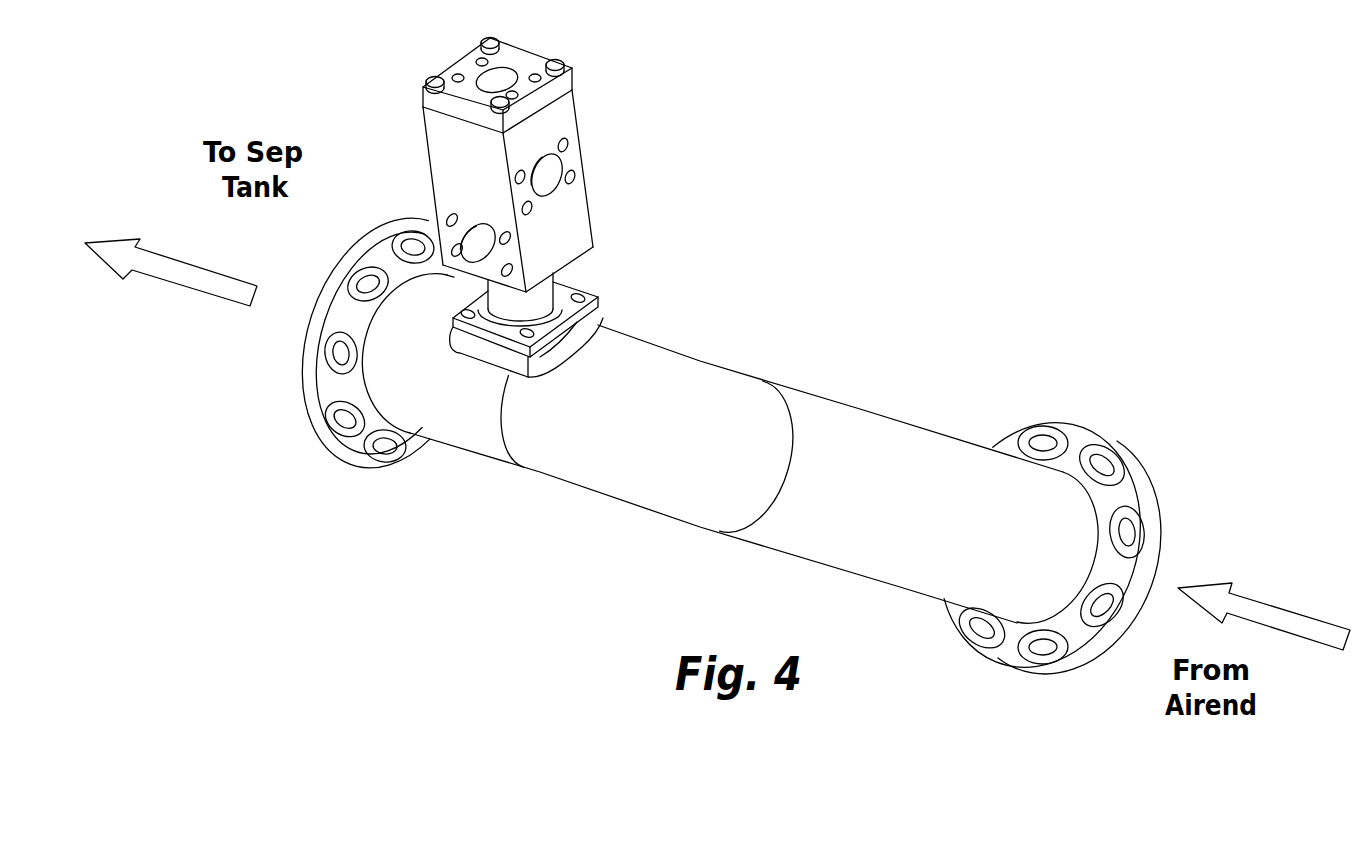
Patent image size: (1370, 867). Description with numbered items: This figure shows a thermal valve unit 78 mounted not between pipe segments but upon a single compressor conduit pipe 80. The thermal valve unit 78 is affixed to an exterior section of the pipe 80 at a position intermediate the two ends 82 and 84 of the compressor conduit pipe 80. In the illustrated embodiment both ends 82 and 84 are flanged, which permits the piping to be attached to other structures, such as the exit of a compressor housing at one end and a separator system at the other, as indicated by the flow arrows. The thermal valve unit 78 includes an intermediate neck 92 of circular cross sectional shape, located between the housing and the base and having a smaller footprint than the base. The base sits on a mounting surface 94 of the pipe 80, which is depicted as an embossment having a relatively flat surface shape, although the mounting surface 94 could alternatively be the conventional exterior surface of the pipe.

The thermal valve unit 78 is at (577, 108).
The compressor conduit pipe 80 is at (858, 408).
The end of compressor conduit pipe 82 is at (1085, 427).
The end of compressor conduit pipe 84 is at (370, 224).
The intermediate neck 92 is at (557, 277).
The mounting surface 94 is at (600, 322).